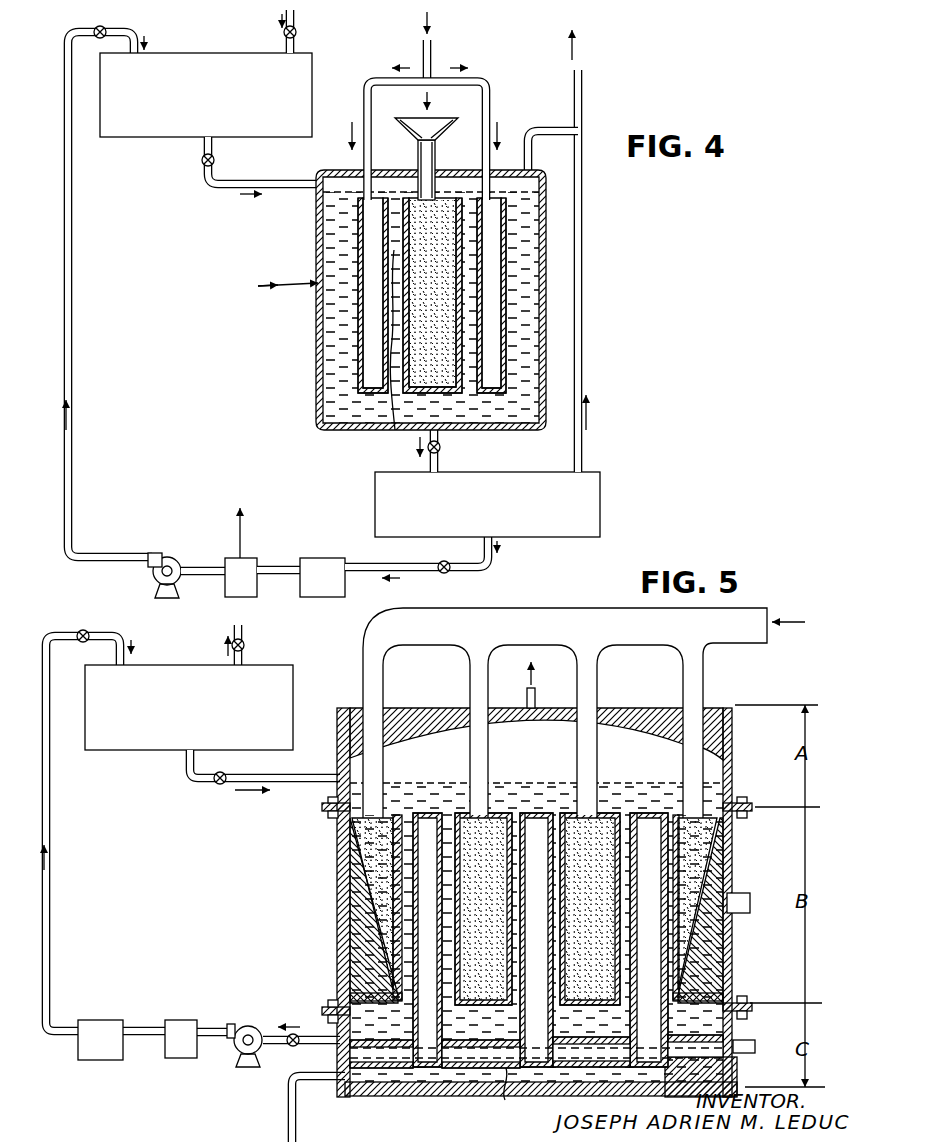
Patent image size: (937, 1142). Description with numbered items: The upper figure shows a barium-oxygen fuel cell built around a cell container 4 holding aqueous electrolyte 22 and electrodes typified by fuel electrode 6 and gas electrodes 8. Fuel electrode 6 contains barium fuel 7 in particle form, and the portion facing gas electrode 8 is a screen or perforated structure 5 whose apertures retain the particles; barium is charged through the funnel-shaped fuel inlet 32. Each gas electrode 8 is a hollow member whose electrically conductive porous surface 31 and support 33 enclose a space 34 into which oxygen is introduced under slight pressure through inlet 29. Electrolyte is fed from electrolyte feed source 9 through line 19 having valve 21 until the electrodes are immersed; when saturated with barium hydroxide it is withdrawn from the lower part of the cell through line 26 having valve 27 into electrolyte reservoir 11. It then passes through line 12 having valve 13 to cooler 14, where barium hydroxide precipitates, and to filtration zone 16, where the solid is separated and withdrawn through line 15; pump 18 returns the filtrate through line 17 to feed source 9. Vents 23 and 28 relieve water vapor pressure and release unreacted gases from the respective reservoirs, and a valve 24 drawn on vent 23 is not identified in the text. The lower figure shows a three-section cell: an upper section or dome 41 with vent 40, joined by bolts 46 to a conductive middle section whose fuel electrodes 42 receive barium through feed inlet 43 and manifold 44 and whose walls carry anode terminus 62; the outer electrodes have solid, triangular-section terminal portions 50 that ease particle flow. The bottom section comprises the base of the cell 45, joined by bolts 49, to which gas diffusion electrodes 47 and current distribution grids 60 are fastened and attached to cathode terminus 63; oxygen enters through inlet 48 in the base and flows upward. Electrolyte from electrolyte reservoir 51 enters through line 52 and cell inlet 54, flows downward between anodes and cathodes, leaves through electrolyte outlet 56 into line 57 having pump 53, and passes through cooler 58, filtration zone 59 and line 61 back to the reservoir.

In FIG. 4, the cell container 4 is at (392, 300).
In FIG. 4, the perforated or porous structure 5 is at (403, 240).
In FIG. 4, the fuel electrode 6 is at (449, 326).
In FIG. 4, the barium fuel 7 is at (432, 293).
In FIG. 4, the gas electrode 8 is at (512, 261).
In FIG. 4, the electrolyte feed source 9 is at (195, 56).
In FIG. 4, the electrolyte reservoir 11 is at (600, 497).
In FIG. 4, the line 12 is at (276, 572).
In FIG. 4, the valve 13 is at (444, 562).
In FIG. 4, the cooler 14 is at (328, 558).
In FIG. 4, the line 15 is at (242, 526).
In FIG. 4, the filtration zone 16 is at (227, 590).
In FIG. 4, the line 17 is at (64, 283).
In FIG. 4, the pump 18 is at (153, 576).
In FIG. 4, the line 19 is at (225, 189).
In FIG. 4, the valve 21 is at (201, 160).
In FIG. 4, the electrolyte 22 is at (324, 243).
In FIG. 4, the vent 23 is at (288, 44).
In FIG. 4, the valve 24 is at (296, 31).
In FIG. 4, the line 26 is at (439, 465).
In FIG. 4, the valve 27 is at (440, 445).
In FIG. 4, the vent 28 is at (583, 262).
In FIG. 4, the inlet 29 is at (432, 46).
In FIG. 4, the electrically conductive porous surface 31 is at (392, 353).
In FIG. 4, the fuel inlet 32 is at (436, 118).
In FIG. 4, the support 33 is at (358, 333).
In FIG. 4, the space 34 is at (370, 289).
In FIG. 5, the vent 40 is at (534, 692).
In FIG. 5, the dome 41 is at (722, 706).
In FIG. 5, the fuel electrode 42 is at (455, 813).
In FIG. 5, the barium feed inlet 43 is at (476, 740).
In FIG. 5, the manifold 44 is at (556, 612).
In FIG. 5, the base of the cell 45 is at (480, 1096).
In FIG. 5, the bolts 46 is at (740, 798).
In FIG. 5, the gas diffusion electrodes 47 is at (538, 813).
In FIG. 5, the inlet 48 is at (497, 1096).
In FIG. 5, the bolts 49 is at (330, 1004).
In FIG. 5, the terminal portions 50 is at (378, 874).
In FIG. 5, the electrolyte reservoir 51 is at (285, 684).
In FIG. 5, the line 52 is at (187, 770).
In FIG. 5, the pump 53 is at (246, 1066).
In FIG. 5, the cell inlet 54 is at (340, 772).
In FIG. 5, the electrolyte outlet 56 is at (340, 1050).
In FIG. 5, the line 57 is at (144, 1028).
In FIG. 5, the cooler 58 is at (181, 1058).
In FIG. 5, the filtration zone 59 is at (97, 1060).
In FIG. 5, the current distribution grids 60 is at (400, 1036).
In FIG. 5, the line 61 is at (52, 830).
In FIG. 5, the anode terminus 62 is at (742, 893).
In FIG. 5, the cathode terminus 63 is at (750, 1053).